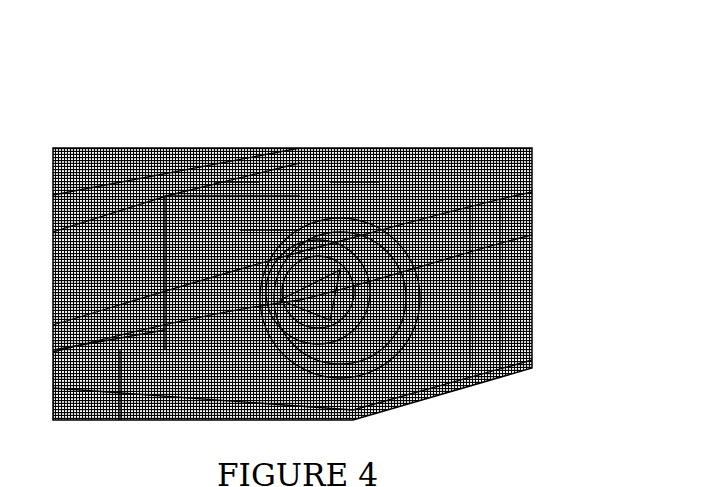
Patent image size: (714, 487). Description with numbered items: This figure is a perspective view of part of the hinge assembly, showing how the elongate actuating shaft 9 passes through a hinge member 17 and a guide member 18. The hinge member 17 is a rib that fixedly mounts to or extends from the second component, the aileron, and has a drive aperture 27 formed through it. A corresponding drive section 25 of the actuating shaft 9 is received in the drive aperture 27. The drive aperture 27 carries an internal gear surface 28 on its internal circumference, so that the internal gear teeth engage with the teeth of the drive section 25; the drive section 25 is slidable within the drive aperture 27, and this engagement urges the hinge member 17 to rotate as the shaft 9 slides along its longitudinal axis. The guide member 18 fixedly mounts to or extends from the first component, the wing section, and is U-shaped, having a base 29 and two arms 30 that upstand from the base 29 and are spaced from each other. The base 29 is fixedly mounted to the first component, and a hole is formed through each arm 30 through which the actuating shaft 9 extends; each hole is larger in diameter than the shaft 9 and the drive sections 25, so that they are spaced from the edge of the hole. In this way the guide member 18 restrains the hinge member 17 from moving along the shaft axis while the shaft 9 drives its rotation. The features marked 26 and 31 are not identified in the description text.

The actuating shaft 9 is at (158, 264).
The hinge member 17 is at (480, 284).
The guide member 18 is at (249, 226).
The drive section 25 is at (297, 340).
The outer ring 26 is at (340, 262).
The drive aperture 27 is at (355, 278).
The internal gear surface 28 is at (400, 250).
The base 29 is at (188, 192).
The arm 30 is at (342, 190).
The lower wall 31 is at (360, 345).